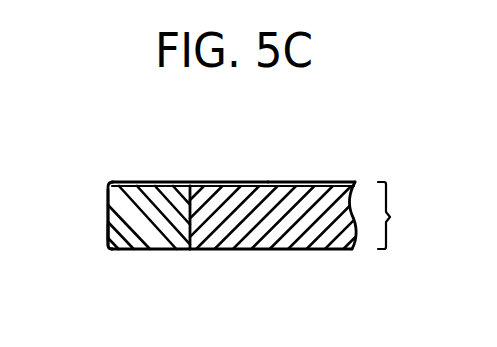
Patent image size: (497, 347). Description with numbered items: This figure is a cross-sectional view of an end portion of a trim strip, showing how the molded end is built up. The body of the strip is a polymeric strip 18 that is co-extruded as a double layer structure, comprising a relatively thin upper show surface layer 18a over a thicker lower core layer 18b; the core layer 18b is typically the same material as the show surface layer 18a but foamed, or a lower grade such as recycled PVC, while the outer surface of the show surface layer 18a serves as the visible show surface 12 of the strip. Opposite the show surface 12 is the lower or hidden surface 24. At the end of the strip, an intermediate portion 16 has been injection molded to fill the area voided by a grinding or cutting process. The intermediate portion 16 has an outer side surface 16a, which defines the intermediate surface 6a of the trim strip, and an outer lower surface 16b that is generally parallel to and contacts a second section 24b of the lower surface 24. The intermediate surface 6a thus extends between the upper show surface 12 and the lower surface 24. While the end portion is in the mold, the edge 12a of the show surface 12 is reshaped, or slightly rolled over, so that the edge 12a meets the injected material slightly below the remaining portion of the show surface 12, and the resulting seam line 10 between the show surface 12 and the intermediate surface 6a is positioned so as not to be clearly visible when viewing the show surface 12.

The seam line 10 is at (110, 186).
The show surface 12 is at (268, 182).
The edge of the show surface 12a is at (112, 183).
The intermediate portion 16 is at (127, 229).
The outer side surface 16a is at (108, 213).
The outer lower surface 16b is at (155, 249).
The intermediate surface 6a is at (107, 233).
The lower surface 24 is at (245, 249).
The second section of the lower surface 24b is at (323, 249).
The polymeric strip 18 is at (401, 215).
The show surface layer 18a is at (333, 182).
The core layer 18b is at (338, 228).